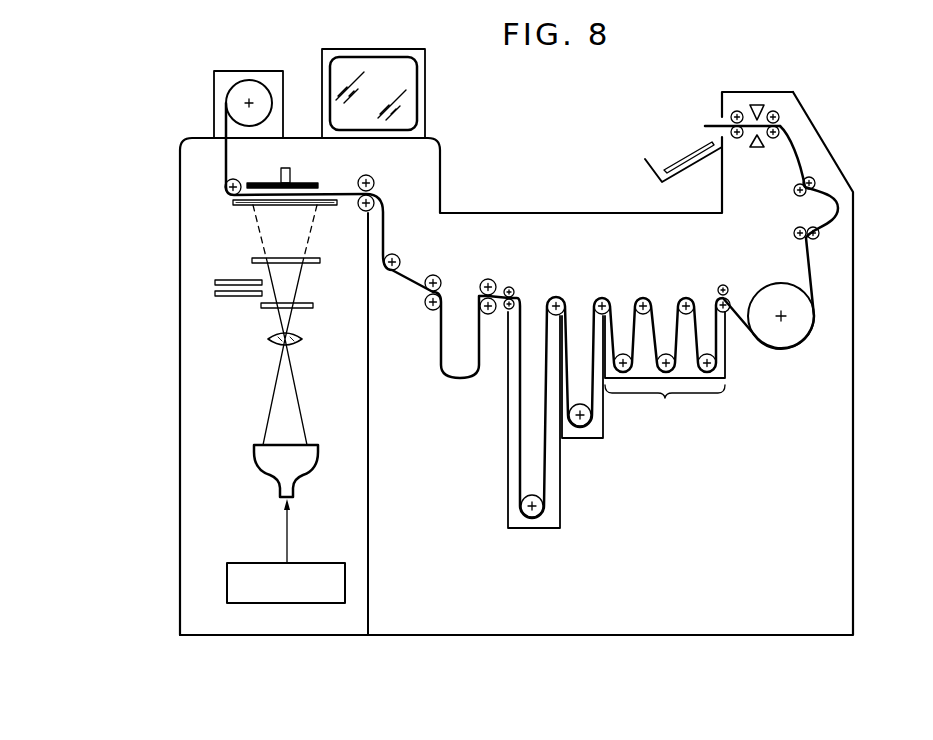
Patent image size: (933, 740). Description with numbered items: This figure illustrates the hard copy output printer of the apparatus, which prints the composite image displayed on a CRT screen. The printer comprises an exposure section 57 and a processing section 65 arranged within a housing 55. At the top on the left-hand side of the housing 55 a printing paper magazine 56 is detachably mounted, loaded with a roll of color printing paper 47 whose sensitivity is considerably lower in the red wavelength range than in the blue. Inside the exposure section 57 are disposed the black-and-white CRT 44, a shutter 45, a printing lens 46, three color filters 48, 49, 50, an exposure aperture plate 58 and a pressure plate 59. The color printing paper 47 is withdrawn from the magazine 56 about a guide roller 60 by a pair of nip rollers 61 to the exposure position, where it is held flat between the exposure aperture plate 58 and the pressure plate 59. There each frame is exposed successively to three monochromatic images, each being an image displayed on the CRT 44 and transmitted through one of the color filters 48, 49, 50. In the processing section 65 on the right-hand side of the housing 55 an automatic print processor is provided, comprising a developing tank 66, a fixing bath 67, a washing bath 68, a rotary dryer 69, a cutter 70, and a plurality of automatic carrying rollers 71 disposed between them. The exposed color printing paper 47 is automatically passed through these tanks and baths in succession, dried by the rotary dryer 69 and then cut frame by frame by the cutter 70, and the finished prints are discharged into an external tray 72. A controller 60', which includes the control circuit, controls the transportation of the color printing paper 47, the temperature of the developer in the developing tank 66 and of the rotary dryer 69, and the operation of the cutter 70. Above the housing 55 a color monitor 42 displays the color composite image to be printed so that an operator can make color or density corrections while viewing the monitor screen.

The color monitor 42 is at (403, 93).
The black-and-white CRT 44 is at (267, 463).
The shutter 45 is at (255, 257).
The printing lens 46 is at (296, 343).
The color printing paper 47 is at (223, 165).
The color filter 48 is at (265, 309).
The color filter 49 is at (226, 297).
The color filter 50 is at (226, 280).
The housing 55 is at (180, 440).
The printing paper magazine 56 is at (214, 98).
The exposure section 57 is at (196, 388).
The exposure aperture plate 58 is at (330, 207).
The pressure plate 59 is at (310, 182).
The guide roller 60 is at (213, 201).
The controller 60' is at (247, 580).
The nip rollers 61 is at (376, 184).
The processing section 65 is at (840, 500).
The developing tank 66 is at (508, 487).
The fixing bath 67 is at (605, 427).
The washing bath 68 is at (727, 368).
The rotary dryer 69 is at (797, 332).
The cutter 70 is at (758, 100).
The automatic carrying rollers 71 is at (433, 275).
The external tray 72 is at (653, 173).